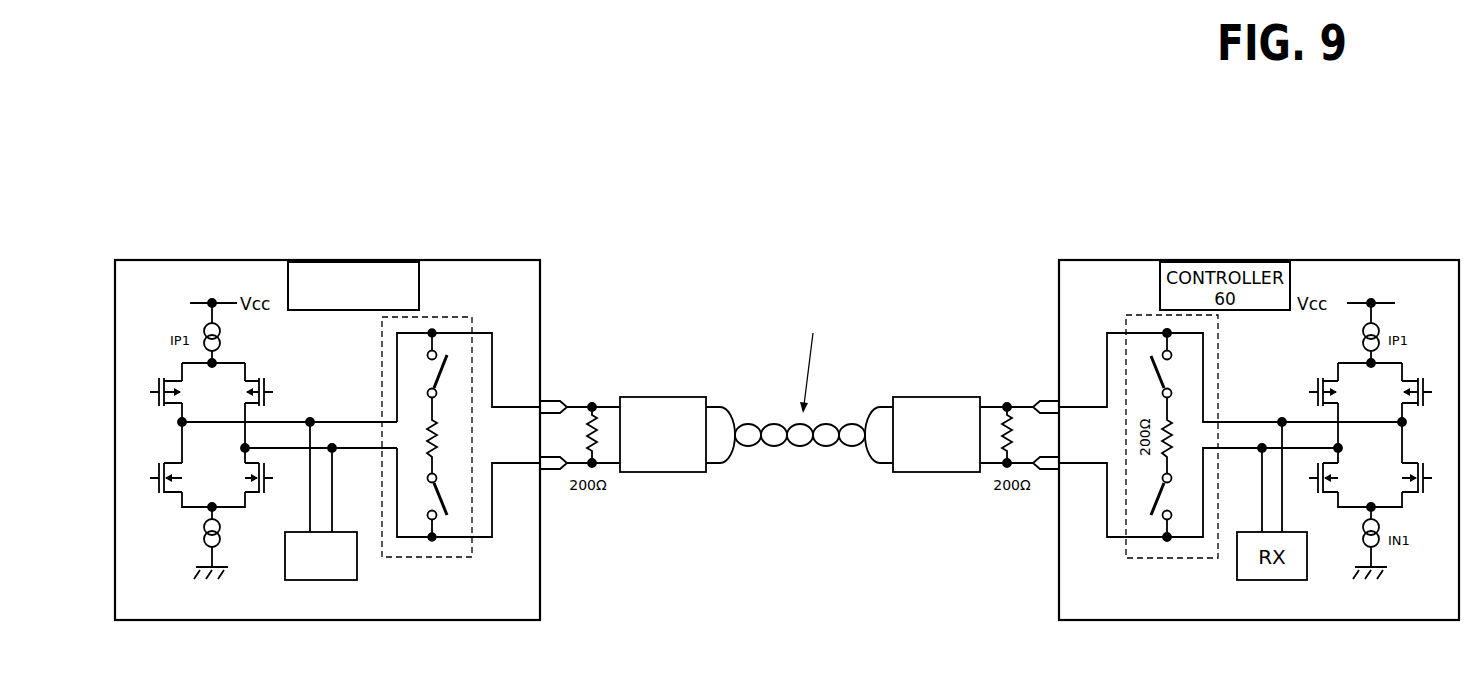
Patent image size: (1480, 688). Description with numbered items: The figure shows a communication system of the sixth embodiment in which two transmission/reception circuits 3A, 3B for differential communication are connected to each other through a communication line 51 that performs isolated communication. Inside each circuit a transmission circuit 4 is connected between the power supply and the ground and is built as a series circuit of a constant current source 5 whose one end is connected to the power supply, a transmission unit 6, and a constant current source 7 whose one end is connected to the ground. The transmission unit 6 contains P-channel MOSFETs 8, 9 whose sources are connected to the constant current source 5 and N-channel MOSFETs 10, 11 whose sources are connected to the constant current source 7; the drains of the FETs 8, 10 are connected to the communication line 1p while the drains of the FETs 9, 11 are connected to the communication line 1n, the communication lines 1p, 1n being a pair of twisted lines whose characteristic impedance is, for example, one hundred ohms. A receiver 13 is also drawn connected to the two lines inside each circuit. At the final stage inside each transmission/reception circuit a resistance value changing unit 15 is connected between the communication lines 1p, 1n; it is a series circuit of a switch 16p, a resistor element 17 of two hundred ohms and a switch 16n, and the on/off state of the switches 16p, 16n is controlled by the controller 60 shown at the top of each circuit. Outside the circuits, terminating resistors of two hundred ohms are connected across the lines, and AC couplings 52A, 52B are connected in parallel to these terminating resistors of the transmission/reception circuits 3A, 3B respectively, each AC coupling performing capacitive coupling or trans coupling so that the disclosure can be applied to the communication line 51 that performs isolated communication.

The transmission/reception circuit 3A is at (323, 260).
The transmission/reception circuit 3B is at (1261, 260).
The controller 60 is at (353, 286).
The transmission circuit 4 is at (208, 428).
The constant current source 5 is at (224, 338).
The transmission unit 6 is at (198, 441).
The constant current source 7 is at (224, 538).
The P-channel MOSFET 8 is at (155, 388).
The P-channel MOSFET 9 is at (273, 388).
The N-channel MOSFET 10 is at (155, 489).
The N-channel MOSFET 11 is at (268, 489).
The receiver RX 13 is at (328, 582).
The resistance value changing unit 15 is at (461, 424).
The switch 16p is at (450, 362).
The switch 16n is at (450, 526).
The resistor element 17 is at (475, 433).
The communication line 1p is at (608, 405).
The communication line 1n is at (616, 470).
The AC coupling 52A is at (668, 397).
The AC coupling 52B is at (945, 397).
The communication line 51 is at (846, 392).